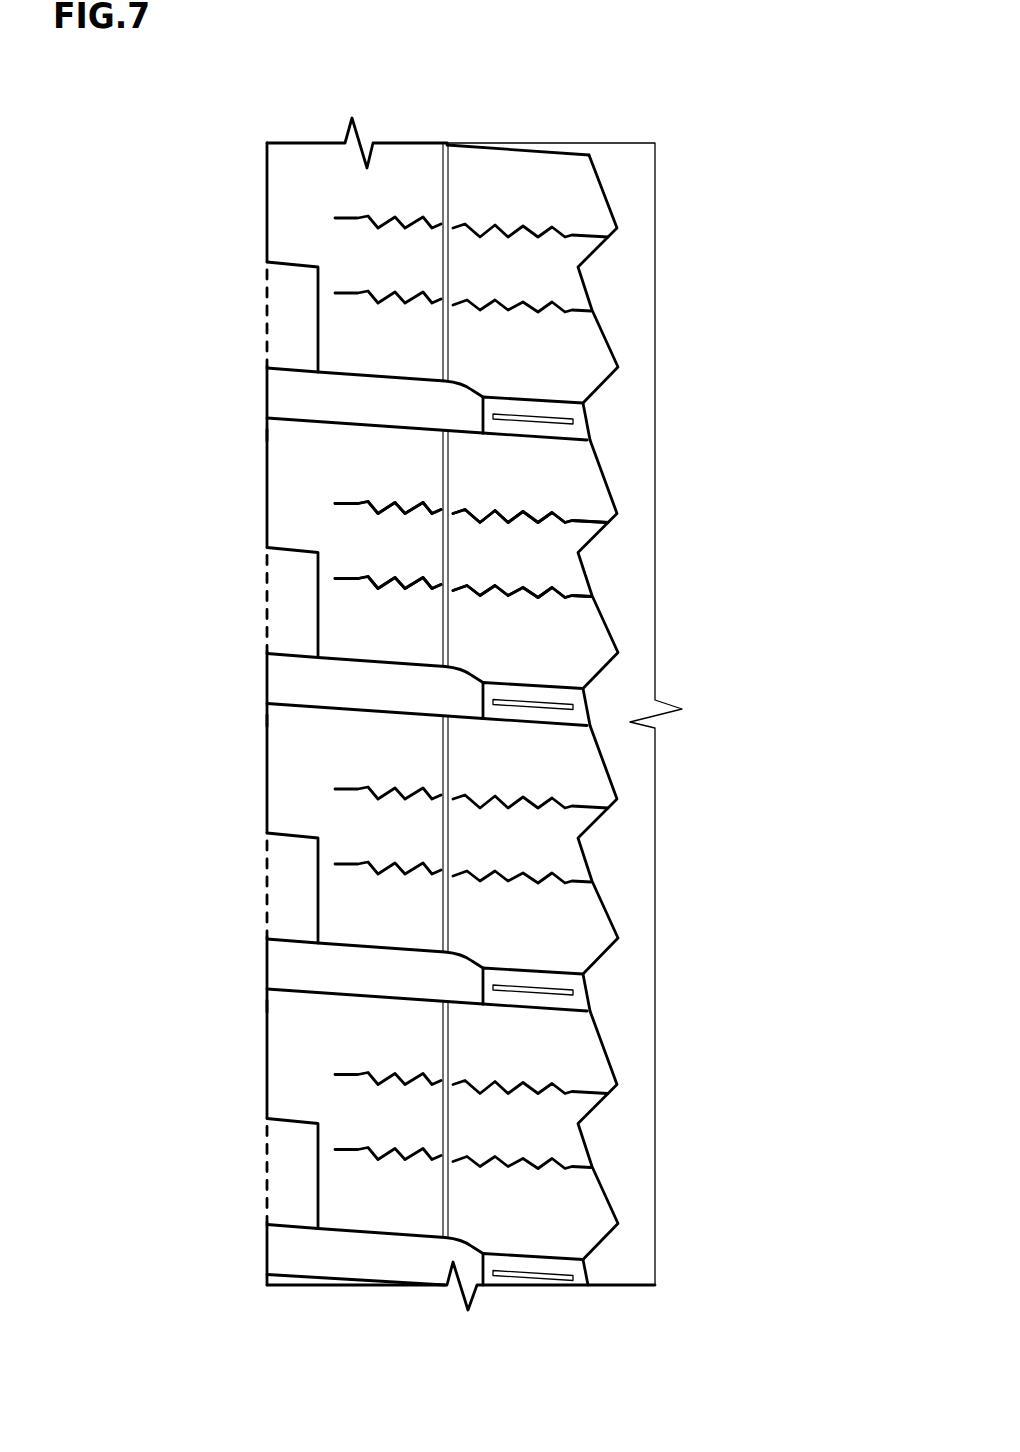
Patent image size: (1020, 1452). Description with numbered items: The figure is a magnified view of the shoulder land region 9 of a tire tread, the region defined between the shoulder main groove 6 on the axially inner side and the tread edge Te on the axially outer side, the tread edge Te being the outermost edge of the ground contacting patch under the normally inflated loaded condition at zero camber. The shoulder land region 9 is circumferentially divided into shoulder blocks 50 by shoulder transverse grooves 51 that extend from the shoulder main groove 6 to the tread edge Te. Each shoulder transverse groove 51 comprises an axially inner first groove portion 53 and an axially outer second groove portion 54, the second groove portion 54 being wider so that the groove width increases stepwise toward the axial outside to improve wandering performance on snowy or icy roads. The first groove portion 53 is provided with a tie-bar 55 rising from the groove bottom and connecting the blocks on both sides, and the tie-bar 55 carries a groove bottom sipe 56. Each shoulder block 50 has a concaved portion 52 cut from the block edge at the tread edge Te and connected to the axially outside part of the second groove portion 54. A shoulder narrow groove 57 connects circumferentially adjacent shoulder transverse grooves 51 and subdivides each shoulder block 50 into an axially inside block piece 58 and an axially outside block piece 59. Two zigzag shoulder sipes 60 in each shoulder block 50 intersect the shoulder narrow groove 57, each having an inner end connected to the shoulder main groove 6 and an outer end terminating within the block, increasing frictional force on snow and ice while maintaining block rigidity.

The tread edge Te is at (266, 197).
The shoulder land region 9 is at (402, 186).
The shoulder narrow groove 57 is at (455, 195).
The shoulder main groove 6 is at (626, 186).
The shoulder block 50 is at (524, 262).
The shoulder transverse groove 51 is at (762, 260).
The second groove portion 54 is at (399, 388).
The first groove portion 53 is at (549, 398).
The axially outside block piece 59 is at (399, 537).
The axially inside block piece 58 is at (542, 546).
The shoulder sipe 60 is at (365, 222).
The concaved portion 52 is at (280, 321).
The groove bottom sipe 56 is at (568, 700).
The tie-bar 55 is at (543, 717).